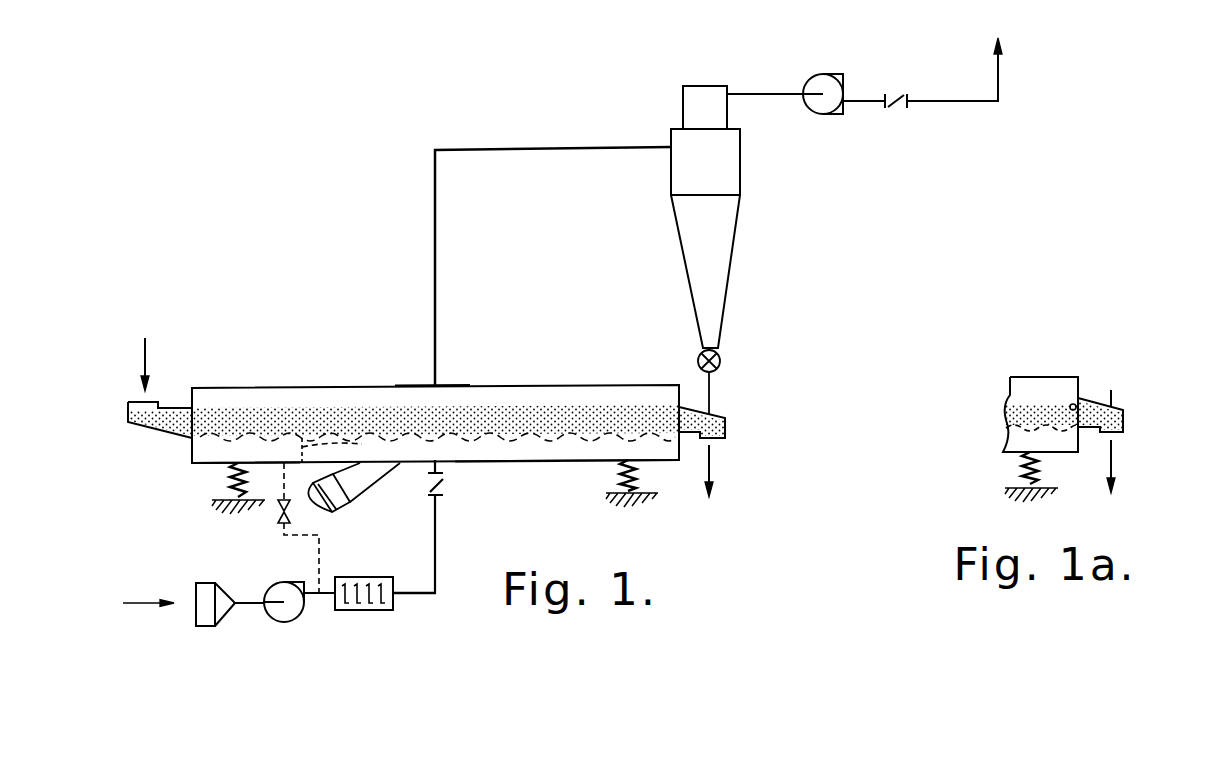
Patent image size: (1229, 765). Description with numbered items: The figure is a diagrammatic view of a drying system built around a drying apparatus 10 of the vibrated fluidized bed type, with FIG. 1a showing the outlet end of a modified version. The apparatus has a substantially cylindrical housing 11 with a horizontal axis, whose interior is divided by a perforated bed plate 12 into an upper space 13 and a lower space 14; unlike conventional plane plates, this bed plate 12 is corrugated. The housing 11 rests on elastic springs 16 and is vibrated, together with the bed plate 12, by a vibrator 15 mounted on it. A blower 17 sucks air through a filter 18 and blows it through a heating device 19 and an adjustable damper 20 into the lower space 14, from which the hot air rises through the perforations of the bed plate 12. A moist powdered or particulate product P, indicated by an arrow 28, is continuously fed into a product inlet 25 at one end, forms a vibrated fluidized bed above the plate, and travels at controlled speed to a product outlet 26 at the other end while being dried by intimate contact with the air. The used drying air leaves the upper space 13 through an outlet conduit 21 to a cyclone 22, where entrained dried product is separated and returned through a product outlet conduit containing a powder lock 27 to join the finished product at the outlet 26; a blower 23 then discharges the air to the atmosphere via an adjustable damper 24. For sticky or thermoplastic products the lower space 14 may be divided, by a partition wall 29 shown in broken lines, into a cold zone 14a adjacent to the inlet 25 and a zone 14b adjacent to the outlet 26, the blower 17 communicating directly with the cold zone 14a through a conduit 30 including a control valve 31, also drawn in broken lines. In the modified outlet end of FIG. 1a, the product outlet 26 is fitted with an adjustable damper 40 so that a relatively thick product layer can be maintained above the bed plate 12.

In FIG. 1, the drying apparatus 10 is at (226, 387).
In FIG. 1, the housing 11 is at (418, 385).
In FIG. 1, the perforated bed plate 12 is at (362, 432).
In FIG. 1, the upper space 13 is at (548, 404).
In FIG. 1, the lower space 14 is at (580, 451).
In FIG. 1, the cold zone 14a is at (207, 456).
In FIG. 1, the zone adjacent to product outlet 14b is at (515, 455).
In FIG. 1, the vibrator 15 is at (360, 472).
In FIG. 1, the springs 16 is at (228, 480).
In FIG. 1A, the springs 16 is at (1020, 466).
In FIG. 1, the blower 17 is at (283, 617).
In FIG. 1, the filter 18 is at (208, 627).
In FIG. 1, the heating device 19 is at (365, 611).
In FIG. 1, the adjustable damper 20 is at (442, 485).
In FIG. 1, the outlet conduit 21 is at (432, 192).
In FIG. 1, the cyclone 22 is at (722, 174).
In FIG. 1, the blower 23 is at (812, 80).
In FIG. 1, the adjustable damper 24 is at (888, 95).
In FIG. 1, the product inlet 25 is at (147, 410).
In FIG. 1, the product outlet 26 is at (727, 421).
In FIG. 1A, the product outlet 26 is at (1125, 420).
In FIG. 1, the powder lock 27 is at (722, 361).
In FIG. 1, the arrow 28 is at (145, 350).
In FIG. 1, the partition wall 29 is at (346, 450).
In FIG. 1, the conduit 30 is at (318, 538).
In FIG. 1, the control valve 31 is at (276, 513).
In FIG. 1A, the adjustable damper 40 is at (1076, 402).
In FIG. 1, the product P is at (298, 427).